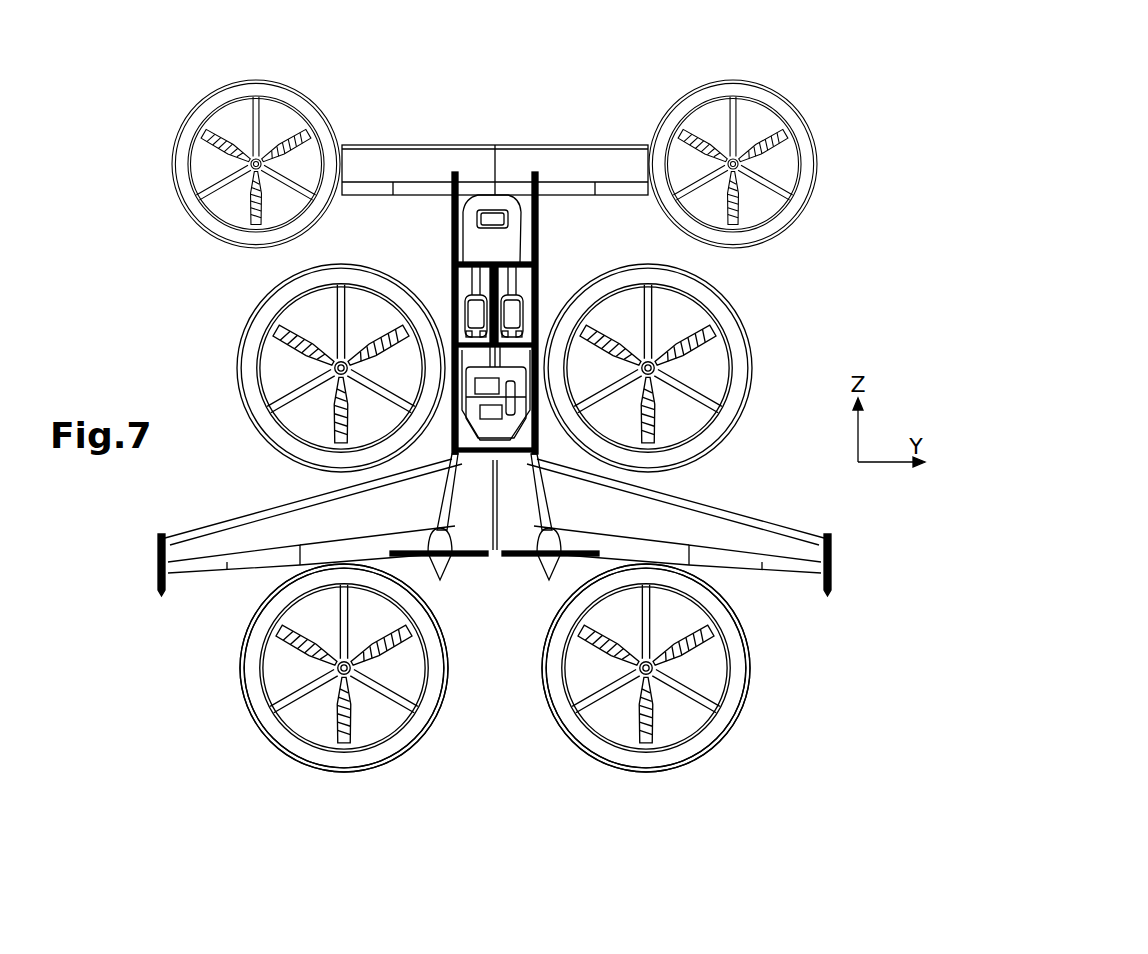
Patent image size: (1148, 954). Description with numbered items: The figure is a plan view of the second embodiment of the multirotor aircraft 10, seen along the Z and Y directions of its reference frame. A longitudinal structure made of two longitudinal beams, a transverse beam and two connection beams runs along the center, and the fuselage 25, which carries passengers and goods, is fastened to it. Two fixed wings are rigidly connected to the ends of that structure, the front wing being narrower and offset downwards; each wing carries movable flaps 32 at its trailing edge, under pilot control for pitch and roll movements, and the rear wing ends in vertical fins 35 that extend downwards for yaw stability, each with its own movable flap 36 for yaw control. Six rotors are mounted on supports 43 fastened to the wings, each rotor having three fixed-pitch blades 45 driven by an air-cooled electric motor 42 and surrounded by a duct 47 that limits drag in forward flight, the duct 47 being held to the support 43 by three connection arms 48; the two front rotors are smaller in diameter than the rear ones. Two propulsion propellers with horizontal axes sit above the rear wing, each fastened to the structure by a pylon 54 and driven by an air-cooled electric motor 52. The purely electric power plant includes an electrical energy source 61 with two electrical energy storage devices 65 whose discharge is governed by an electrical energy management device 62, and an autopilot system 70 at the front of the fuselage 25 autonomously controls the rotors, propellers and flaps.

The multirotor aircraft 10 is at (776, 720).
The autopilot system 70 is at (490, 200).
The fuselage 25 is at (510, 287).
The electrical energy storage device 65 is at (468, 385).
The movable flap 32 is at (412, 190).
The vertical fin 35 is at (155, 550).
The movable flap 36 is at (160, 582).
The electric motor 42 is at (612, 752).
The support 43 is at (648, 590).
The fixed-pitch blade 45 is at (730, 660).
The duct 47 is at (565, 740).
The connection arm 48 is at (722, 745).
The electric motor 52 is at (523, 545).
The pylon 54 is at (537, 517).
The electrical energy source 61 is at (430, 465).
The electrical energy management device 62 is at (548, 470).